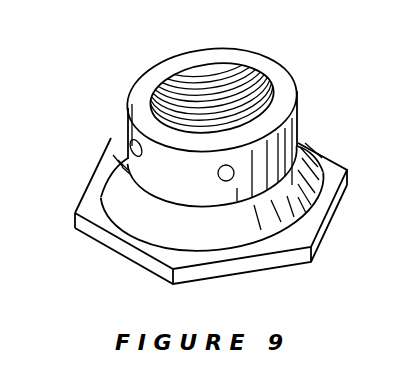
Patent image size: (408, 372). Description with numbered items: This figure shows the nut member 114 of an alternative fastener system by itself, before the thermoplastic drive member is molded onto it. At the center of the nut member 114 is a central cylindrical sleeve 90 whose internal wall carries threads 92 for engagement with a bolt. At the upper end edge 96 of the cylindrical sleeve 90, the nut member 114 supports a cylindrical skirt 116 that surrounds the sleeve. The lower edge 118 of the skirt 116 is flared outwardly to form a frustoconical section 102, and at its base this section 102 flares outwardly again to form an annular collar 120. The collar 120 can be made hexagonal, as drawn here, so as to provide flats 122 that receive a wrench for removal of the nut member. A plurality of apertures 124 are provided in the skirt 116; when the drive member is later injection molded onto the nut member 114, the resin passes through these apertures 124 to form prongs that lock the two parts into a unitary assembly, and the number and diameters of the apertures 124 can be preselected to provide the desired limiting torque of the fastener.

The central cylindrical sleeve 90 is at (282, 97).
The threads 92 is at (163, 75).
The upper end edge 96 is at (166, 84).
The frustoconical section 102 is at (117, 190).
The nut member 114 is at (136, 102).
The cylindrical skirt 116 is at (128, 128).
The lower edge 118 is at (282, 190).
The annular collar 120 is at (292, 243).
The flats 122 is at (133, 257).
The apertures 124 is at (234, 170).